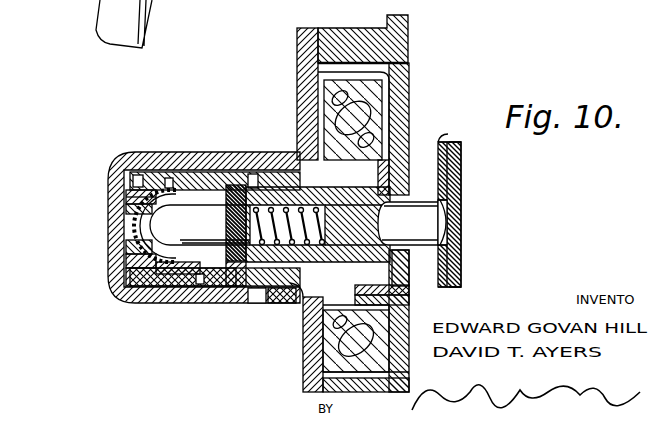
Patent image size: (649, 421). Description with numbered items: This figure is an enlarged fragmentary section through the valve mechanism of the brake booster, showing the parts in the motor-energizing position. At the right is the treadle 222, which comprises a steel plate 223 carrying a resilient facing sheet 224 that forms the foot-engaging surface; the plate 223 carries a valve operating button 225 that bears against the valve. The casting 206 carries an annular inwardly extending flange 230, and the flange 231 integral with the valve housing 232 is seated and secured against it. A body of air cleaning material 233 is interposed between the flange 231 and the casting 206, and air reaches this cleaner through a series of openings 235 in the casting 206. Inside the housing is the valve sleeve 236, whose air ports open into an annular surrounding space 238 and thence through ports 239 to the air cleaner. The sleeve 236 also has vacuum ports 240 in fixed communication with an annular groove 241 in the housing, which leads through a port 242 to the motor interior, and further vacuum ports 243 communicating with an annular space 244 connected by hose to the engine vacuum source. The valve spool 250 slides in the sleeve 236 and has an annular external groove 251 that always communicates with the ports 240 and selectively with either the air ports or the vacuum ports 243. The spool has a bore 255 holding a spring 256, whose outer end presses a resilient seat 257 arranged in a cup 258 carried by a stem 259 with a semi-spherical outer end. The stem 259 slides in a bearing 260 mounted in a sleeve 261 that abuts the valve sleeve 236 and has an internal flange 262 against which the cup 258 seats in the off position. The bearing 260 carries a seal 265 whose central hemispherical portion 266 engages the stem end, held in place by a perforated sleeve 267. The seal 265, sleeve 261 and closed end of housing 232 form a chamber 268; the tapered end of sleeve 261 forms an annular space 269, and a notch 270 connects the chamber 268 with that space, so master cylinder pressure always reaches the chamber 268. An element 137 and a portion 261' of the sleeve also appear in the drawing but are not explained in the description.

The shaft collar 137 is at (395, 170).
The casting 206 is at (410, 108).
The treadle 222 is at (464, 248).
The steel plate 223 is at (440, 142).
The resilient facing sheet 224 is at (461, 170).
The valve operating button 225 is at (462, 205).
The annular inwardly extending flange 230 is at (352, 29).
The flange 231 is at (298, 63).
The valve housing 232 is at (118, 294).
The air cleaning material 233 is at (380, 90).
The openings 235 is at (395, 72).
The valve sleeve 236 is at (410, 270).
The annular surrounding space 238 is at (395, 290).
The ports 239 is at (398, 303).
The vacuum ports 240 is at (290, 172).
The annular groove 241 is at (285, 303).
The port 242 is at (310, 322).
The vacuum ports 243 is at (236, 288).
The annular space 244 is at (262, 303).
The valve spool 250 is at (253, 174).
The annular external groove 251 is at (318, 224).
The bore 255 is at (409, 223).
The spring 256 is at (412, 212).
The resilient seat 257 is at (160, 228).
The cup 258 is at (236, 185).
The stem 259 is at (150, 236).
The bearing 260 is at (175, 304).
The sleeve 261 is at (186, 229).
The cylinder bore 261' is at (119, 160).
The internal flange 262 is at (200, 304).
The seal 265 is at (168, 178).
The central hemispherical portion 266 is at (130, 244).
The perforated sleeve 267 is at (130, 262).
The chamber 268 is at (130, 197).
The annular space 269 is at (150, 278).
The notch 270 is at (130, 188).